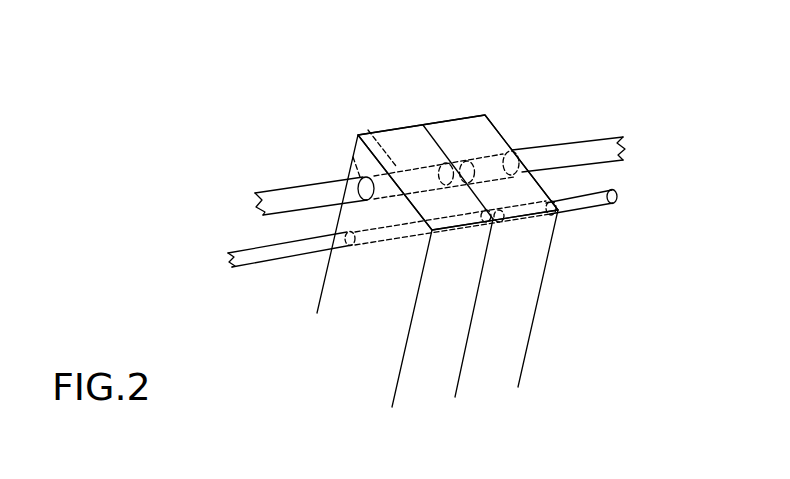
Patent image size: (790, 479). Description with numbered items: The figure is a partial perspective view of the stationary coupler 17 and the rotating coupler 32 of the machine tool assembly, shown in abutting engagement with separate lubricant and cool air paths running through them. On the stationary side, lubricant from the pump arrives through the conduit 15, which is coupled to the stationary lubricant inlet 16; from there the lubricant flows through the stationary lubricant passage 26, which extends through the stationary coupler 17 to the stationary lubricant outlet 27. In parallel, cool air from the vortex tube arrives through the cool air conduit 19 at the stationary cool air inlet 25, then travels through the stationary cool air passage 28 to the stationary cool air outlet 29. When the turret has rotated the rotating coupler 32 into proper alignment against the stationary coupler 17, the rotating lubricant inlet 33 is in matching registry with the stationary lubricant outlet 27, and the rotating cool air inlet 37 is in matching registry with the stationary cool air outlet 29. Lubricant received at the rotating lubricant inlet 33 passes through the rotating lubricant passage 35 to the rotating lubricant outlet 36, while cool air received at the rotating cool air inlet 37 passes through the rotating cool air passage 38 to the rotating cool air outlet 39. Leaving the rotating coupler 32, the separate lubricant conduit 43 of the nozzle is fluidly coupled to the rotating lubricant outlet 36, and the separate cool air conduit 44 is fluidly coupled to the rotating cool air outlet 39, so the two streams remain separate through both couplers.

The conduit 15 is at (580, 195).
The stationary lubricant inlet 16 is at (549, 214).
The stationary coupler 17 is at (462, 110).
The cool air conduit 19 is at (567, 143).
The stationary cool air inlet 25 is at (506, 152).
The stationary lubricant passage 26 is at (535, 214).
The stationary lubricant outlet 27 is at (502, 221).
The stationary cool air passage 28 is at (481, 157).
The stationary cool air outlet 29 is at (458, 161).
The rotating coupler 32 is at (380, 123).
The rotating lubricant inlet 33 is at (483, 221).
The rotating lubricant passage 35 is at (397, 240).
The rotating lubricant outlet 36 is at (352, 245).
The rotating cool air inlet 37 is at (441, 163).
The rotating cool air passage 38 is at (368, 130).
The rotating cool air outlet 39 is at (353, 157).
The lubricant conduit 43 is at (263, 262).
The cool air conduit 44 is at (323, 207).